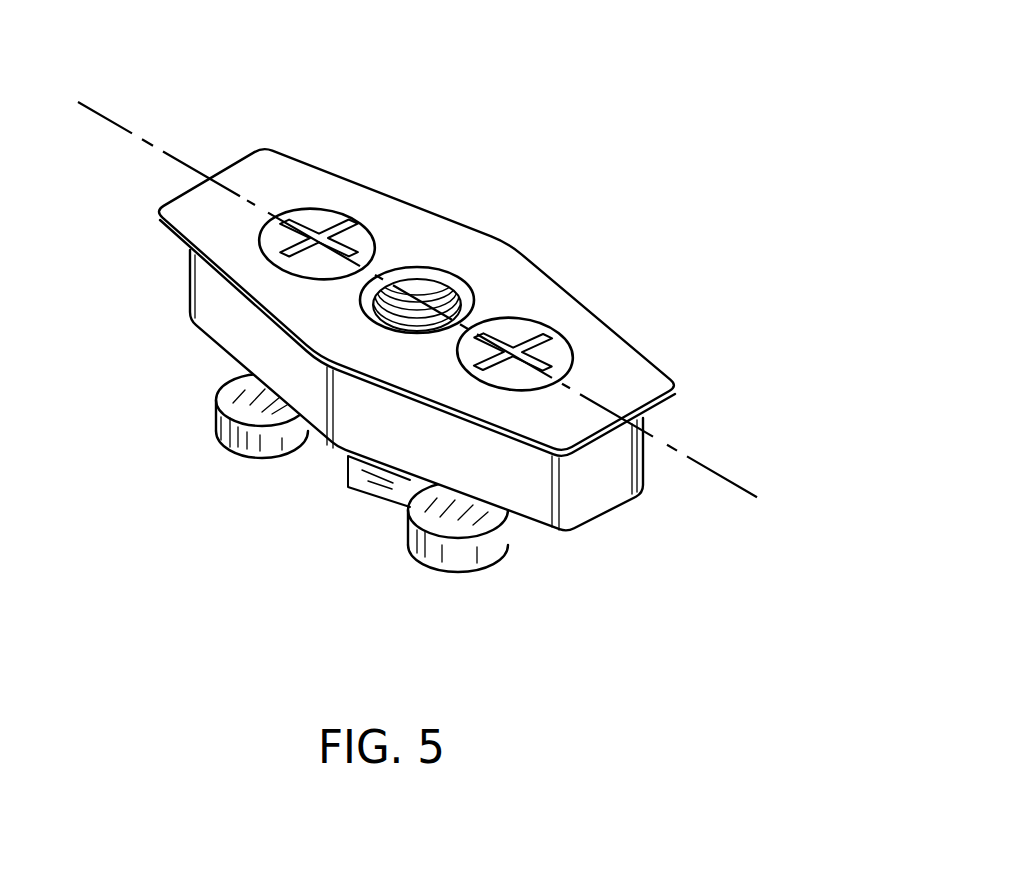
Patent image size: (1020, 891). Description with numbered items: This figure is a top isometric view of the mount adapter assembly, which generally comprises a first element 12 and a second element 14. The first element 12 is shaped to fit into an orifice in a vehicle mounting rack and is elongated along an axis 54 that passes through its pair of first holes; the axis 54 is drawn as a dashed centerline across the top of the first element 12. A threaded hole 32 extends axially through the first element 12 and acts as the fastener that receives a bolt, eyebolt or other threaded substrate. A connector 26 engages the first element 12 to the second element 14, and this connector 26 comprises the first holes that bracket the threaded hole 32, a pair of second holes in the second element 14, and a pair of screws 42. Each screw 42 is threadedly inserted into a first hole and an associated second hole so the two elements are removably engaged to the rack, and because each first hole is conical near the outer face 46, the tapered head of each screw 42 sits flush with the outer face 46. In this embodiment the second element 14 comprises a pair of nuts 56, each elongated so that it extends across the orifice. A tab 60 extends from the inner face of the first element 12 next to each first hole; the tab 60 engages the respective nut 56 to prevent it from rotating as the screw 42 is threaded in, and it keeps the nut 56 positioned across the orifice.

The first element 12 is at (627, 382).
The second element 14 is at (269, 512).
The connector 26 is at (320, 220).
The threaded hole 32 is at (428, 298).
The screw 42 is at (514, 330).
The outer face 46 is at (581, 430).
The axis 54 is at (723, 478).
The nut 56 is at (443, 533).
The tab 60 is at (377, 482).